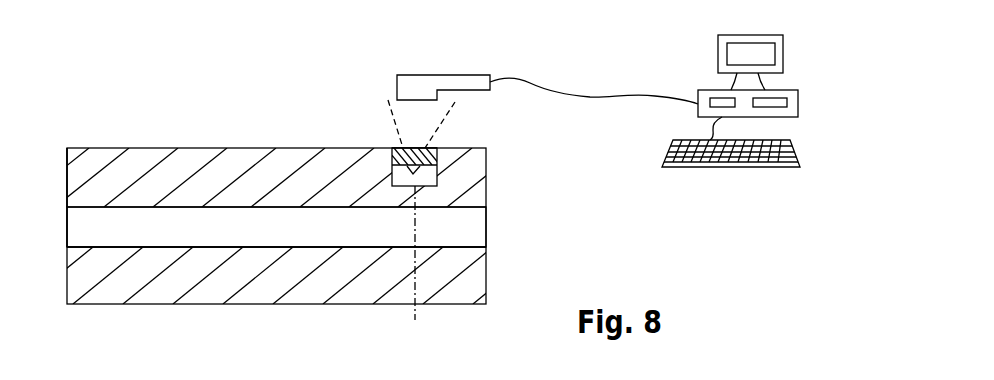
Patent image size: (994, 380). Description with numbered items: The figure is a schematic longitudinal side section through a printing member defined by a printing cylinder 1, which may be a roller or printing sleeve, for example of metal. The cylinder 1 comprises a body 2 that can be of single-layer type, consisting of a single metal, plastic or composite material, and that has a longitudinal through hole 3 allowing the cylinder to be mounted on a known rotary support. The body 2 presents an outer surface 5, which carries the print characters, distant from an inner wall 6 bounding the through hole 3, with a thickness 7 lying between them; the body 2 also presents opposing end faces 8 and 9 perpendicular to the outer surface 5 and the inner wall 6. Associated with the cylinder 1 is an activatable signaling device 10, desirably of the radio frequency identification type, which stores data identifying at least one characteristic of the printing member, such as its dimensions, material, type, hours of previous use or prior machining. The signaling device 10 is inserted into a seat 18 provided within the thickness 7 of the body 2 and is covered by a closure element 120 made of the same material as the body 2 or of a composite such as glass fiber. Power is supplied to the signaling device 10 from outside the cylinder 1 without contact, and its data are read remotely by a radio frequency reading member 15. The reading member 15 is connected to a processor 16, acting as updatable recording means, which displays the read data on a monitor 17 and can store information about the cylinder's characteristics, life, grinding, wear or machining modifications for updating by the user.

The printing cylinder 1 is at (100, 322).
The body 2 is at (50, 149).
The longitudinal through hole 3 is at (257, 233).
The outer surface 5 is at (155, 149).
The inner wall 6 is at (165, 244).
The thickness 7 is at (363, 290).
The end face 8 is at (67, 172).
The end face 9 is at (405, 113).
The activatable signaling device 10 is at (428, 177).
The radio frequency reading member 15 is at (415, 83).
The processor 16 is at (822, 80).
The monitor 17 is at (783, 53).
The seat 18 is at (393, 177).
The closure element 120 is at (415, 148).